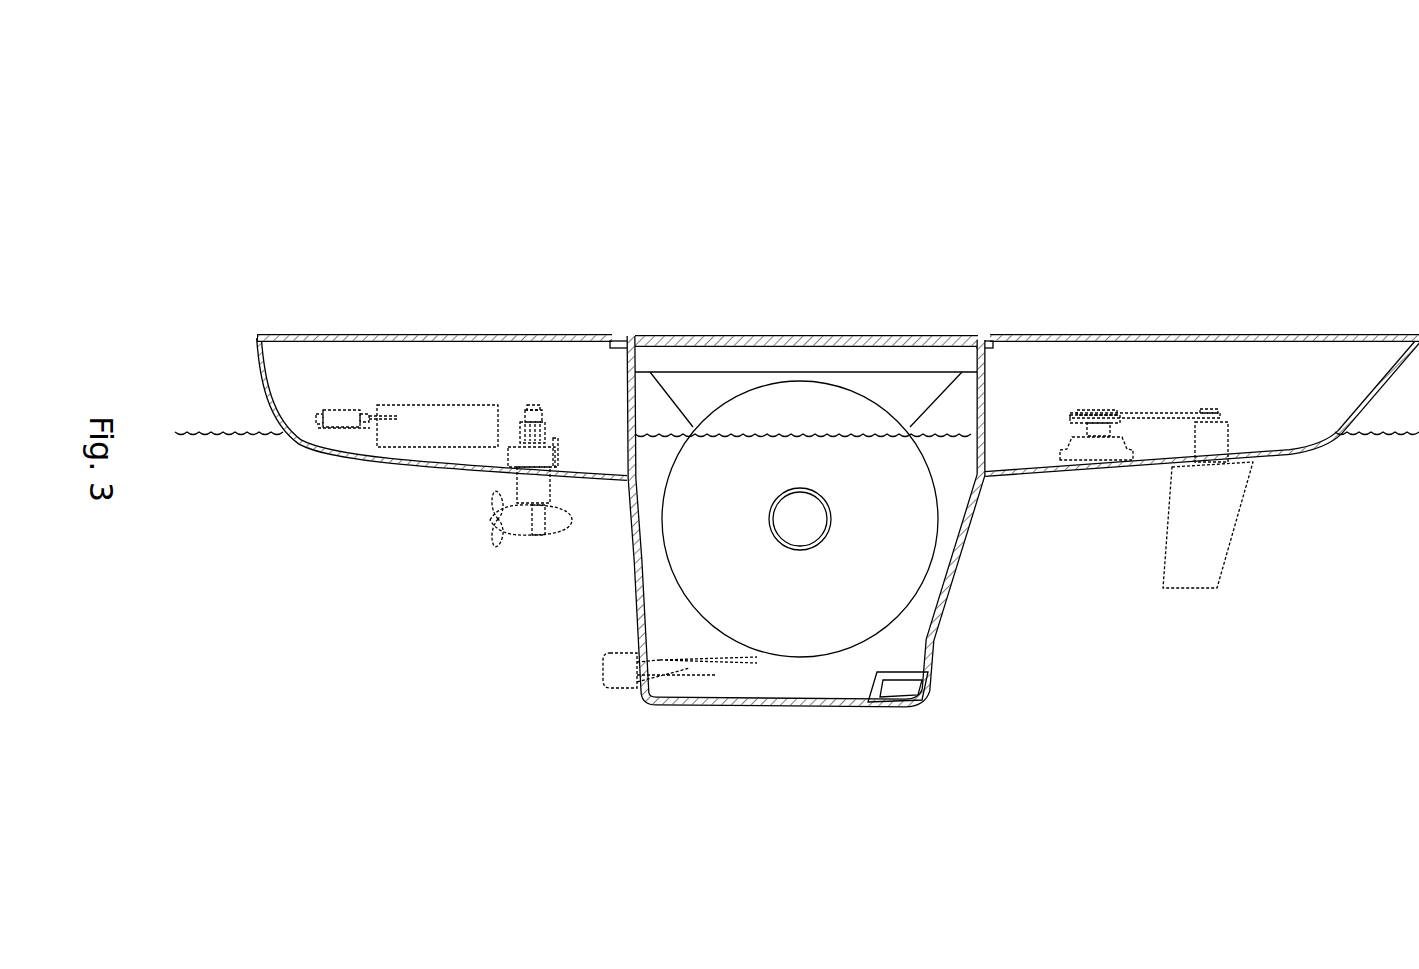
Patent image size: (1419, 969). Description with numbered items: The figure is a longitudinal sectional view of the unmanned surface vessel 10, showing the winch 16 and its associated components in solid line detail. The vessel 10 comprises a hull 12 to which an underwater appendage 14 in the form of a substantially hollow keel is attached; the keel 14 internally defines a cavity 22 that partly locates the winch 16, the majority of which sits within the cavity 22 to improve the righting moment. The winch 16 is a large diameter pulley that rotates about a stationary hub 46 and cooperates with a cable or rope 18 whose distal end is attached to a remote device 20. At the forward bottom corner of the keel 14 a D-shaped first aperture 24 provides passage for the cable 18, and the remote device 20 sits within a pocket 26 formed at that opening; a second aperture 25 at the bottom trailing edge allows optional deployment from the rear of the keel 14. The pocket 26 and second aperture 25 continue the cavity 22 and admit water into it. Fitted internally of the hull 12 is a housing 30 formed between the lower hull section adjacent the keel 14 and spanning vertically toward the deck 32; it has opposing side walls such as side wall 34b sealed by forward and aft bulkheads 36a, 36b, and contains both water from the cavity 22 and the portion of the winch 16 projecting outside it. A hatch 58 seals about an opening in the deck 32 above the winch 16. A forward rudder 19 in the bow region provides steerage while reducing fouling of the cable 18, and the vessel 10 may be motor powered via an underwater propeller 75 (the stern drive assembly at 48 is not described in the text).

The unmanned surface vessel 10 is at (1027, 238).
The hull 12 is at (1303, 453).
The underwater appendage 14 is at (633, 610).
The winch 16 is at (814, 518).
The cable or rope 18 is at (970, 595).
The rudder 19 is at (1210, 545).
The remote device 20 is at (972, 719).
The cavity 22 is at (973, 507).
The first aperture 24 is at (887, 707).
The second aperture 25 is at (643, 702).
The pocket 26 is at (905, 688).
The housing 30 is at (623, 413).
The deck 32 is at (1250, 332).
The side wall 34b is at (740, 383).
The forward bulkhead 36a is at (990, 402).
The aft bulkhead 36b is at (586, 340).
The stationary hub 46 is at (790, 522).
The stern drive 48 is at (509, 496).
The hatch 58 is at (833, 338).
The underwater propeller 75 is at (473, 518).